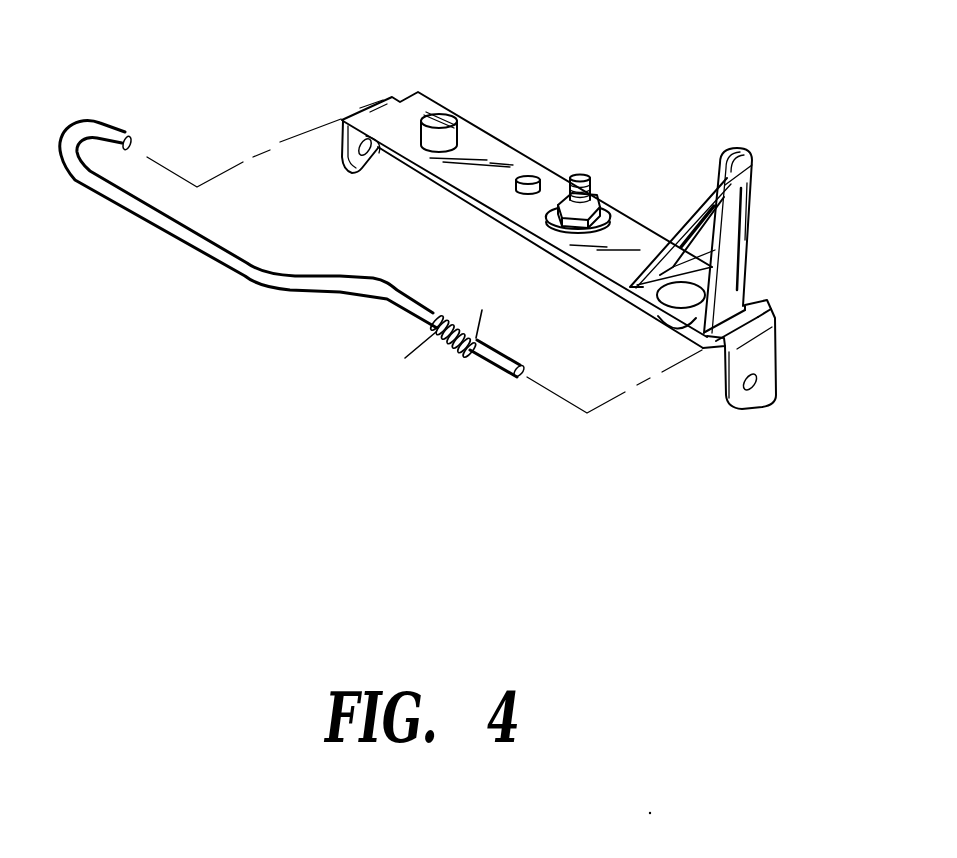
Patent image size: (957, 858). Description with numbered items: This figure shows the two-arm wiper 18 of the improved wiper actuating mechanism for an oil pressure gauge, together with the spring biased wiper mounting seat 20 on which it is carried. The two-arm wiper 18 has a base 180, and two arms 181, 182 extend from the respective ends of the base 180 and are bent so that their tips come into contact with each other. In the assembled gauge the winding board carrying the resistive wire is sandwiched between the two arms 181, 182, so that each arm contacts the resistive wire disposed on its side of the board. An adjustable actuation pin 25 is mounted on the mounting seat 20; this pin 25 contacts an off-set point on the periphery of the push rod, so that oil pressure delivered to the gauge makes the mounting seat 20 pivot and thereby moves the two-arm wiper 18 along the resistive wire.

The spring biased wiper mounting seat 20 is at (477, 147).
The adjustable actuation pin 25 is at (582, 170).
The two-arm wiper 18 is at (707, 239).
The base 180 is at (633, 285).
The arm 181 is at (753, 260).
The arm 182 is at (692, 212).